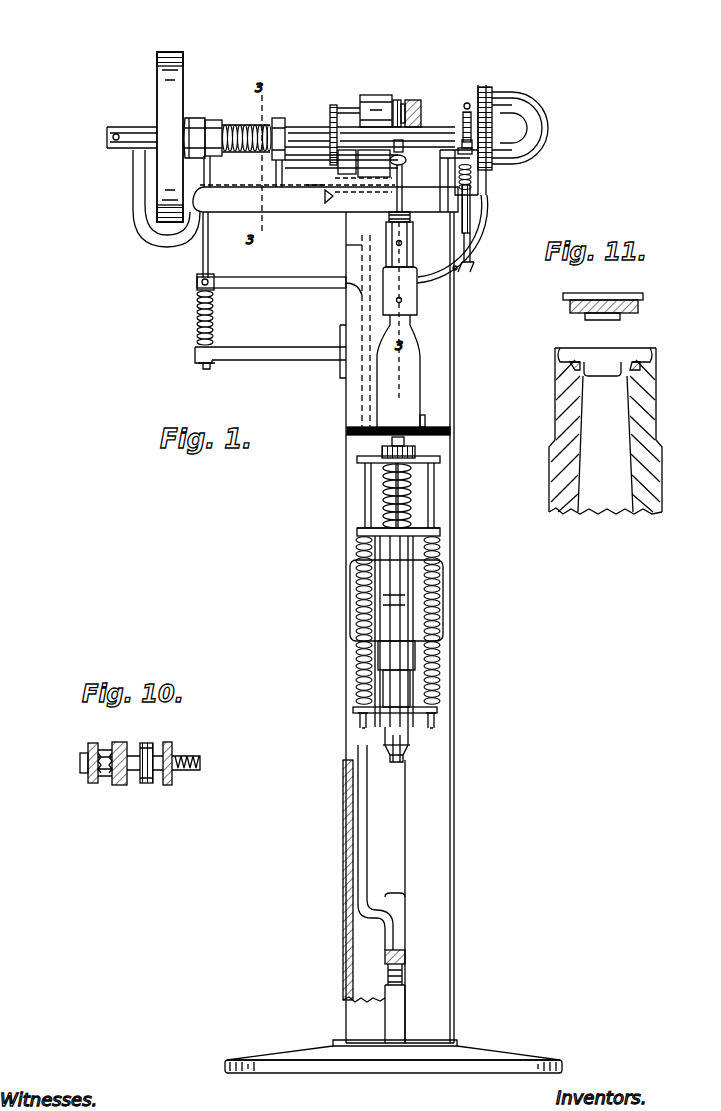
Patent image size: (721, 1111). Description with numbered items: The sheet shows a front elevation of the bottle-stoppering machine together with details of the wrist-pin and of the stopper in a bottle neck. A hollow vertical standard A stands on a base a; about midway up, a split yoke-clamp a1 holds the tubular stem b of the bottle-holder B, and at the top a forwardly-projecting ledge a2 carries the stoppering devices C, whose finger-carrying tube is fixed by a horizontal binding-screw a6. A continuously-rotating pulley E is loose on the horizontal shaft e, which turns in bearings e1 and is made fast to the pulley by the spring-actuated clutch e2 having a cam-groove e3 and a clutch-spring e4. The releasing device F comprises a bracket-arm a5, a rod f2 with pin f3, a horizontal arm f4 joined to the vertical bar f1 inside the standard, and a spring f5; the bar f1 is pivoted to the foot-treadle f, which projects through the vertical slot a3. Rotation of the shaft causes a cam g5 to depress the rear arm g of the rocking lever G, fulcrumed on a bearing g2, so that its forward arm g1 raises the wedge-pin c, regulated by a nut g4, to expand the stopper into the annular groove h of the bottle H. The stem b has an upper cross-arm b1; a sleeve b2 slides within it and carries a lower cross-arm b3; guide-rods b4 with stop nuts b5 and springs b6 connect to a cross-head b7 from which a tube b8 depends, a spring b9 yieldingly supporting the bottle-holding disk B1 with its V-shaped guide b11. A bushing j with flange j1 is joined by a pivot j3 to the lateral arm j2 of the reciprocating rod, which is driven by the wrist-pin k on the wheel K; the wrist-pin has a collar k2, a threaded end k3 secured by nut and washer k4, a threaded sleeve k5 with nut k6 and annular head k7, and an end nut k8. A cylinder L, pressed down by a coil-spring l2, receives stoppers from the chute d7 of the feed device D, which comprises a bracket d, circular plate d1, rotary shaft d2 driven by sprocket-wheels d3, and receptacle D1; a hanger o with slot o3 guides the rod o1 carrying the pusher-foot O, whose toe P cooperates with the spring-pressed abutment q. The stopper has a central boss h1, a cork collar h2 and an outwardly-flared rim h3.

In FIG. 1, the tubular vertical standard A is at (395, 629).
In FIG. 1, the base a is at (512, 1058).
In FIG. 1, the split yoke-clamp a1 is at (385, 583).
In FIG. 1, the forwardly-projecting ledge a2 is at (350, 195).
In FIG. 1, the vertical slot a3 is at (405, 832).
In FIG. 1, the bracket-arm a5 is at (262, 360).
In FIG. 1, the horizontal binding-screw a6 is at (328, 212).
In FIG. 1, the bottle-holder B is at (440, 532).
In FIG. 1, the bottle-holding disk B1 is at (455, 425).
In FIG. 1, the tubular stem b is at (385, 658).
In FIG. 1, the rigid cross-arm b1 is at (357, 531).
In FIG. 1, the sleeve b2 is at (385, 680).
In FIG. 1, the lower cross-arm b3 is at (355, 708).
In FIG. 1, the vertical guide-rods b4 is at (365, 490).
In FIG. 1, the nuts b5 is at (362, 720).
In FIG. 1, the springs b6 is at (440, 624).
In FIG. 1, the cross-head b7 is at (357, 460).
In FIG. 1, the tube b8 is at (385, 504).
In FIG. 1, the spring b9 is at (412, 512).
In FIG. 1, the V-shaped guide b11 is at (427, 425).
In FIG. 1, the stoppering devices C is at (359, 328).
In FIG. 1, the wedge-pin c is at (397, 178).
In FIG. 1, the feed device D is at (533, 128).
In FIG. 1, the rotary semispherical receptacle D1 is at (540, 108).
In FIG. 1, the bracket d is at (480, 88).
In FIG. 1, the circular flat plate d1 is at (490, 88).
In FIG. 1, the horizontal rotary shaft d2 is at (343, 125).
In FIG. 1, the sprocket-wheels d3 is at (337, 105).
In FIG. 1, the delivery-chute d7 is at (463, 262).
In FIG. 1, the continuously-rotating pulley E is at (157, 88).
In FIG. 1, the horizontal shaft e is at (333, 105).
In FIG. 1, the bearings e1 is at (155, 128).
In FIG. 1, the spring-actuated clutch e2 is at (198, 118).
In FIG. 1, the cam-groove e3 is at (212, 120).
In FIG. 1, the clutch-spring e4 is at (245, 125).
In FIG. 1, the releasing device F is at (166, 230).
In FIG. 1, the foot-treadle f is at (405, 960).
In FIG. 1, the vertical bar f1 is at (367, 877).
In FIG. 1, the rod f2 is at (200, 256).
In FIG. 1, the pin f3 is at (212, 160).
In FIG. 1, the horizontal arm f4 is at (260, 289).
In FIG. 1, the spring f5 is at (200, 318).
In FIG. 1, the rocking lever G is at (333, 160).
In FIG. 1, the rear arm g is at (278, 165).
In FIG. 1, the forward arm g1 is at (406, 161).
In FIG. 1, the bearing g2 is at (345, 166).
In FIG. 1, the nut g4 is at (466, 112).
In FIG. 1, the cam g5 is at (280, 118).
In FIG. 11, the bottle H is at (605, 431).
In FIG. 11, the annular groove h is at (652, 358).
In FIG. 11, the central boss h1 is at (604, 322).
In FIG. 11, the collar h2 is at (640, 310).
In FIG. 11, the outwardly-flared rim h3 is at (640, 300).
In FIG. 1, the wheel K is at (372, 95).
In FIG. 1, the wrist-pin k is at (398, 100).
In FIG. 10, the wrist-pin k is at (200, 763).
In FIG. 10, the collar k2 is at (146, 783).
In FIG. 10, the threaded end k3 is at (148, 750).
In FIG. 10, the nut and washer k4 is at (170, 752).
In FIG. 10, the exteriorly-threaded sleeve k5 is at (105, 778).
In FIG. 10, the nut k6 is at (118, 785).
In FIG. 10, the annular head k7 is at (92, 783).
In FIG. 10, the nut k8 is at (80, 762).
In FIG. 1, the cylinder L is at (418, 258).
In FIG. 1, the coil-spring l2 is at (411, 218).
In FIG. 1, the pusher-foot O is at (470, 210).
In FIG. 1, the hanger o is at (459, 174).
In FIG. 1, the rod o1 is at (462, 144).
In FIG. 1, the slot o3 is at (454, 153).
In FIG. 1, the toe P is at (470, 248).
In FIG. 1, the spring-pressed abutment q is at (470, 262).
In FIG. 1, the bushing j is at (388, 738).
In FIG. 1, the exterior flange j1 is at (392, 748).
In FIG. 1, the lateral arm j2 is at (402, 752).
In FIG. 1, the pivot j3 is at (398, 758).